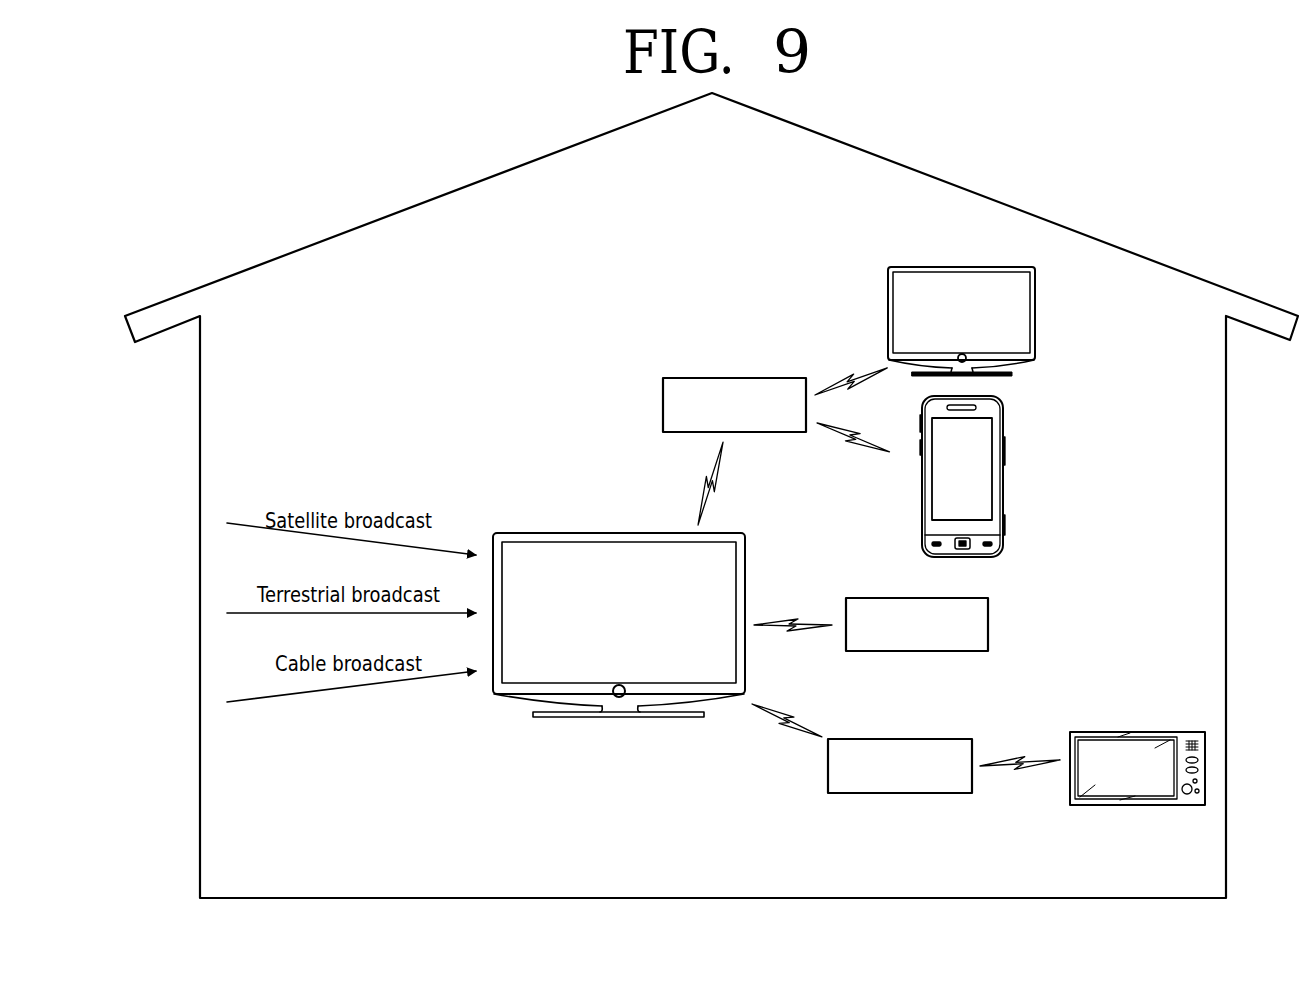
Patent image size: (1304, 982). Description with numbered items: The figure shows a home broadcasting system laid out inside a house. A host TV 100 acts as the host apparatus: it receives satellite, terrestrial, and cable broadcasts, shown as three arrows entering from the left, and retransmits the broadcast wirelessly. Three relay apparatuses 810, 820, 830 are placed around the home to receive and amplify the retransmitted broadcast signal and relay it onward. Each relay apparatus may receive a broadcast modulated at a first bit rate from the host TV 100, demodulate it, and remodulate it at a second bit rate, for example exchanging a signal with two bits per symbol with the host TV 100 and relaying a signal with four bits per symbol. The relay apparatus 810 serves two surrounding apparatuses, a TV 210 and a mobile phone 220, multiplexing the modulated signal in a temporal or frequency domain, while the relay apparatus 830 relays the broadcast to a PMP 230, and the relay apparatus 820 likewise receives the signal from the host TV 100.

The host TV 100 is at (618, 532).
The TV 210 is at (973, 265).
The mobile phone 220 is at (1000, 398).
The PMP 230 is at (1157, 732).
The relay apparatus 810 is at (763, 378).
The relay apparatus 820 is at (989, 597).
The relay apparatus 830 is at (930, 738).